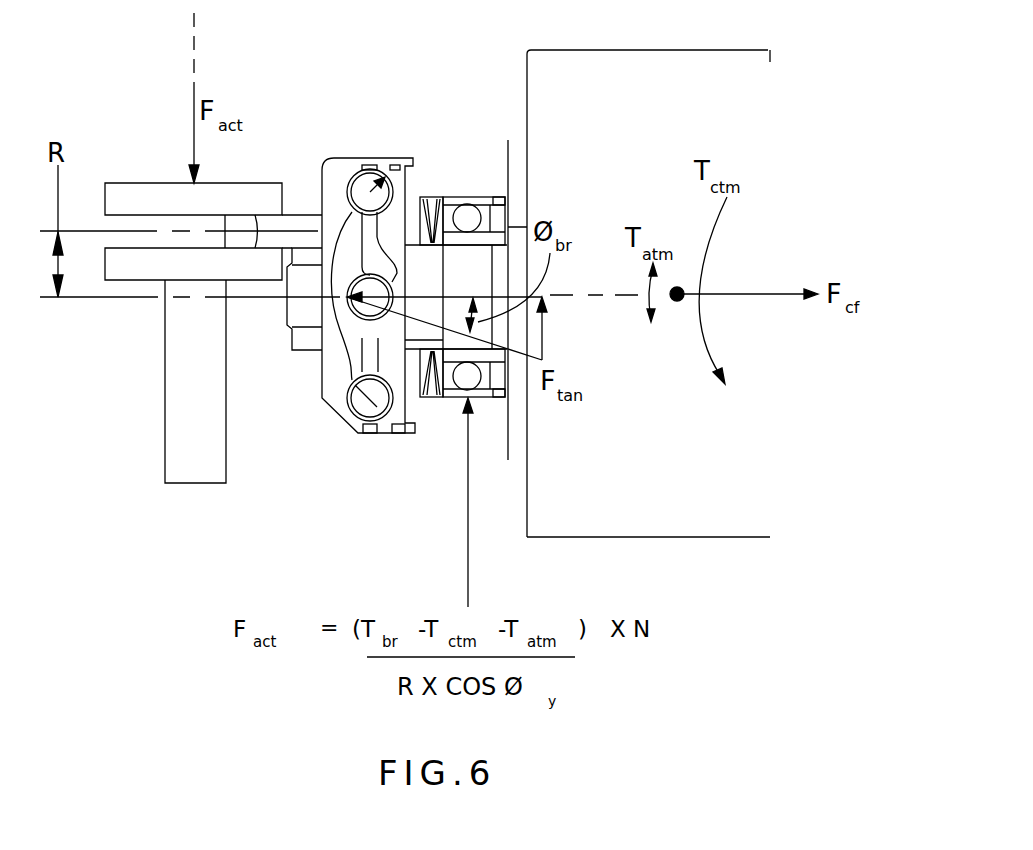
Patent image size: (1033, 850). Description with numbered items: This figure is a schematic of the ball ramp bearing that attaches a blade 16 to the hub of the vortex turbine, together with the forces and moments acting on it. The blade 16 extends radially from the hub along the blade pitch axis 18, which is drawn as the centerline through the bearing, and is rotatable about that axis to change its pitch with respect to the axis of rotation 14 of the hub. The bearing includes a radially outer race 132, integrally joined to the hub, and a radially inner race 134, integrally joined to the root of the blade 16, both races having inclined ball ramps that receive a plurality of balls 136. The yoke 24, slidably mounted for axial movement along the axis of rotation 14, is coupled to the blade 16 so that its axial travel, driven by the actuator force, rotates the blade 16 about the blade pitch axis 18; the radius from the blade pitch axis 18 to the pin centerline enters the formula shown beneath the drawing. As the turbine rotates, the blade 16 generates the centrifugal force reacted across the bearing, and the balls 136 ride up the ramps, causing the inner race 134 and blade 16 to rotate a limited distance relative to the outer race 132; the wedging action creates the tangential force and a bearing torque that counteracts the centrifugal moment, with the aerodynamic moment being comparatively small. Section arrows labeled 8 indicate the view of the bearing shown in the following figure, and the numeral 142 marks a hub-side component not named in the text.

The axis of rotation 14 is at (196, 50).
The yoke 24 is at (165, 420).
The section line 8- 8 is at (368, 138).
The hub block 142 is at (307, 350).
The radially inner race 134 is at (345, 413).
The radially outer race 132 is at (407, 190).
The balls 136 is at (395, 402).
The blades 16 is at (697, 537).
The blade pitch axis 18 is at (588, 298).